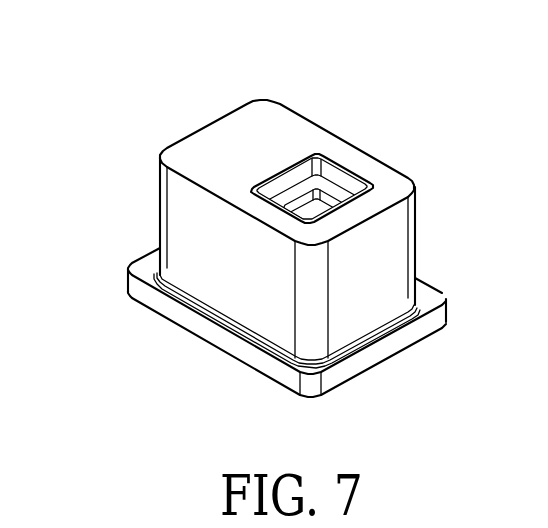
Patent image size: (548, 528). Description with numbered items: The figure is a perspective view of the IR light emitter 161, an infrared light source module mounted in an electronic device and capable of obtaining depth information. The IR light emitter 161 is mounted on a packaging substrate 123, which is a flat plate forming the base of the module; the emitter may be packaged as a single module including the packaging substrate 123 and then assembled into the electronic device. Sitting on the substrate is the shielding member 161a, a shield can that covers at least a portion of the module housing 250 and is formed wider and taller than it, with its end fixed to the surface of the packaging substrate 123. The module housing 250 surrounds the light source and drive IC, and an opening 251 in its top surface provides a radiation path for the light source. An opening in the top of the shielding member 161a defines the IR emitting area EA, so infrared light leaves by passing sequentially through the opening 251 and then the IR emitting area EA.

The packaging substrate 123 is at (137, 268).
The IR light emitter 161 is at (167, 122).
The shielding member 161a is at (392, 170).
The module housing 250 is at (333, 187).
The opening 251 is at (308, 209).
The IR emitting area EA is at (303, 185).